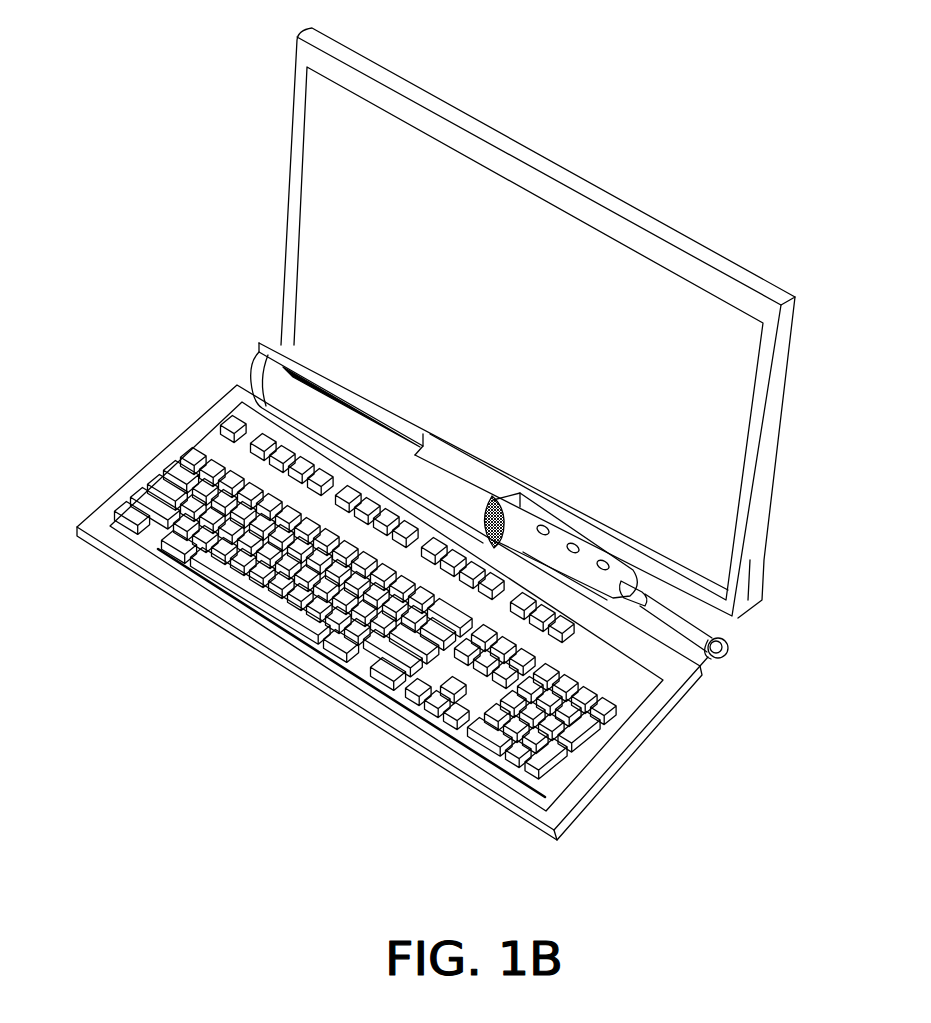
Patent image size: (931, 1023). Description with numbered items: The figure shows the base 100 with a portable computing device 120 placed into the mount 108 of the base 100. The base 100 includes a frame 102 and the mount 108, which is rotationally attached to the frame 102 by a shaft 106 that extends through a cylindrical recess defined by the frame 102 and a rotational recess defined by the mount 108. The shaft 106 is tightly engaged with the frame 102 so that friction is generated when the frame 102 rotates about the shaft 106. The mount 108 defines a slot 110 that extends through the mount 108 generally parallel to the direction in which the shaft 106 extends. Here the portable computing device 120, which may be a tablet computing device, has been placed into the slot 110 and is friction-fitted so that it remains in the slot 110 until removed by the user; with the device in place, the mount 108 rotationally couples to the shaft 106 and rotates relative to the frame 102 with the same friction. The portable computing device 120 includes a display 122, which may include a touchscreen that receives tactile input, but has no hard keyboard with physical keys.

The base 100 is at (132, 192).
The frame 102 is at (131, 478).
The shaft 106 is at (722, 657).
The mount 108 is at (258, 372).
The slot 110 is at (262, 316).
The portable computing device 120 is at (622, 197).
The display 122 is at (486, 361).